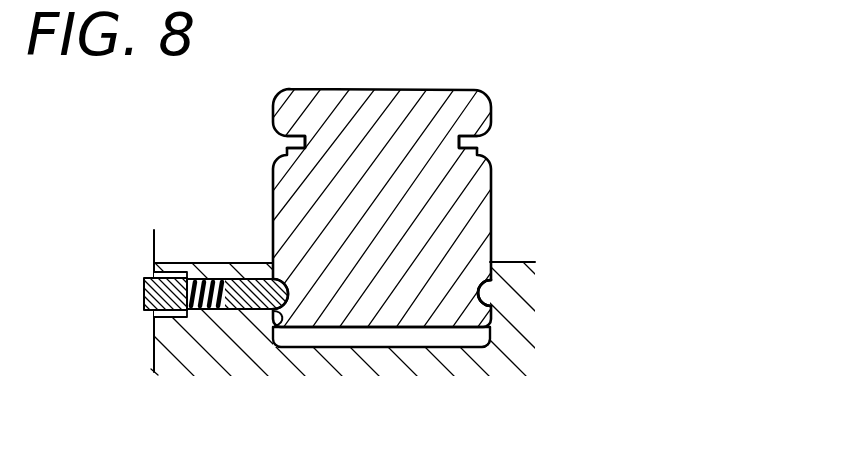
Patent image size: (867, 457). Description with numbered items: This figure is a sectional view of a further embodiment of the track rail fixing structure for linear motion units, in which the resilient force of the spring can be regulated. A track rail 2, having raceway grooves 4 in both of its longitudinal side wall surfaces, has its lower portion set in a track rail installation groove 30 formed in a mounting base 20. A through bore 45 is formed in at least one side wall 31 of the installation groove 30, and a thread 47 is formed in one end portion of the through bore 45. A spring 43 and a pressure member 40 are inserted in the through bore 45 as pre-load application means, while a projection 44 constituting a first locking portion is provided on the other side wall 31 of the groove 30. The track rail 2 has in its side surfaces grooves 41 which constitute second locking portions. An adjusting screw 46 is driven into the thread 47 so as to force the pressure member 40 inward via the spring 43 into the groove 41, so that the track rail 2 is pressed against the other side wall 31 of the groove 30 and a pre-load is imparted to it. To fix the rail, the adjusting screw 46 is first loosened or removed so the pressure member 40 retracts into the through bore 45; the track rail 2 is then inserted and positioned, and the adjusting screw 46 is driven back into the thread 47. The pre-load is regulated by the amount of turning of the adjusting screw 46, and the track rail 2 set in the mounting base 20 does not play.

The track rail 2 is at (378, 163).
The raceway grooves 4 is at (283, 155).
The mounting base 20 is at (218, 270).
The track rail installation groove 30 is at (388, 334).
The side wall 31 is at (284, 328).
The pressure member 40 is at (202, 314).
The groove 41 is at (263, 310).
The spring 43 is at (200, 283).
The projection 44 is at (494, 289).
The through bore 45 is at (211, 312).
The adjusting screw 46 is at (155, 297).
The thread 47 is at (168, 320).